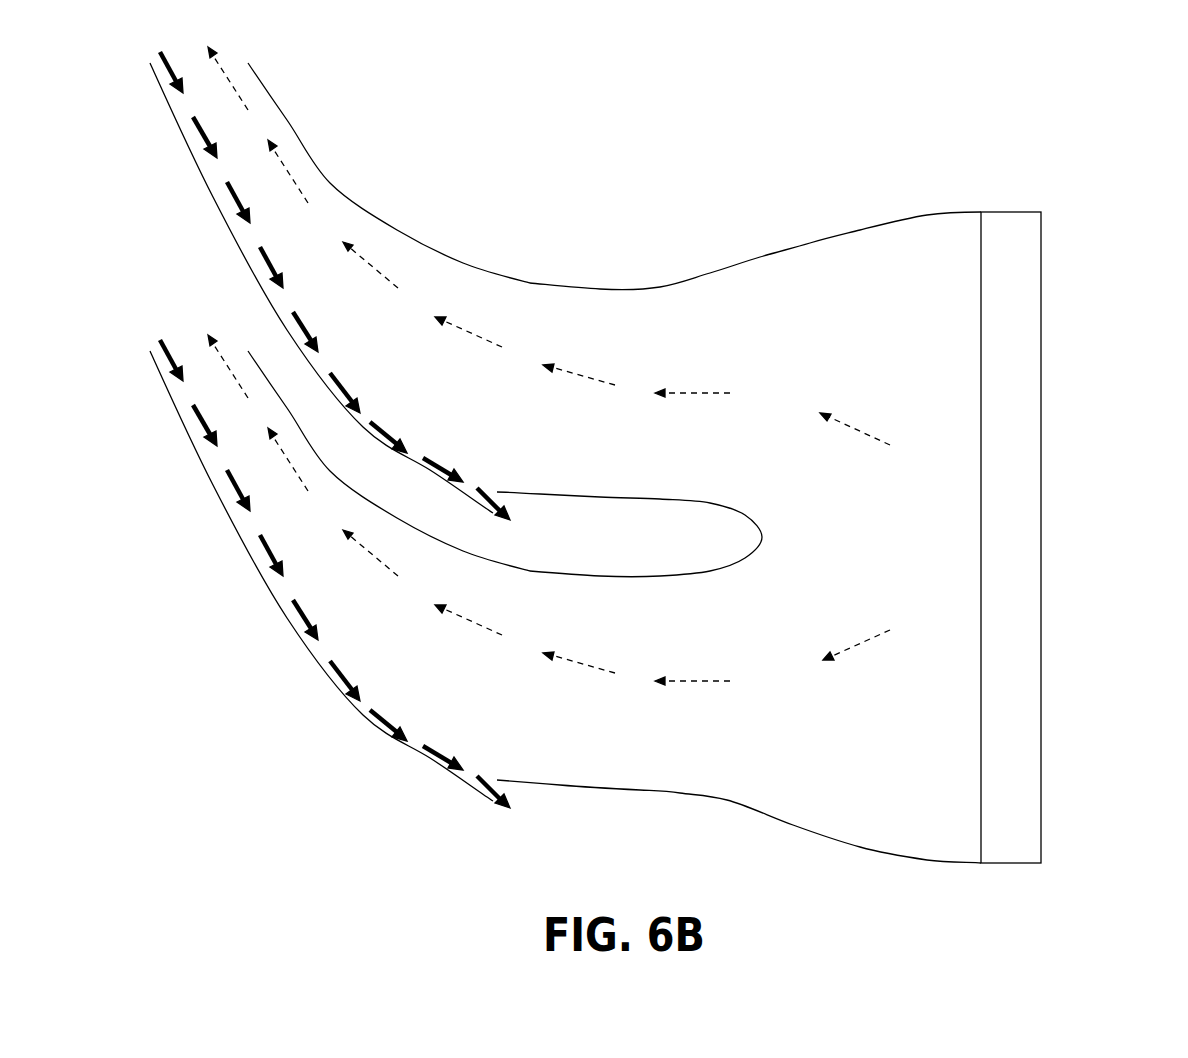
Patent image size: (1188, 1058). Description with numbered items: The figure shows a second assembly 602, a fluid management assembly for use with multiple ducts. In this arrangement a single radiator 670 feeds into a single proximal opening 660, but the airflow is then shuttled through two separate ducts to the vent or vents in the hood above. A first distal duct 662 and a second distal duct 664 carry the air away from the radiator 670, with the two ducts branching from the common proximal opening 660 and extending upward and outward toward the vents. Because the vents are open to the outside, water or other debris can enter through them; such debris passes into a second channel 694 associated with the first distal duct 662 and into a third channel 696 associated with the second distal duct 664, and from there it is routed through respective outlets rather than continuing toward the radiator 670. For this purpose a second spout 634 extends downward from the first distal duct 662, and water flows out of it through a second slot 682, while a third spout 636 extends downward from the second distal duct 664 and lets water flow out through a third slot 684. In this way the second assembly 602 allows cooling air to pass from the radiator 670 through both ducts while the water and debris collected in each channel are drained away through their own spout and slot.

The second assembly 602 is at (538, 135).
The second channel 694 is at (436, 372).
The third channel 696 is at (436, 659).
The second slot 682 is at (485, 466).
The third slot 684 is at (485, 754).
The second spout 634 is at (478, 528).
The third spout 636 is at (467, 808).
The proximal opening 660 is at (893, 875).
The first distal duct 662 is at (895, 197).
The second distal duct 664 is at (655, 808).
The radiator 670 is at (1041, 521).